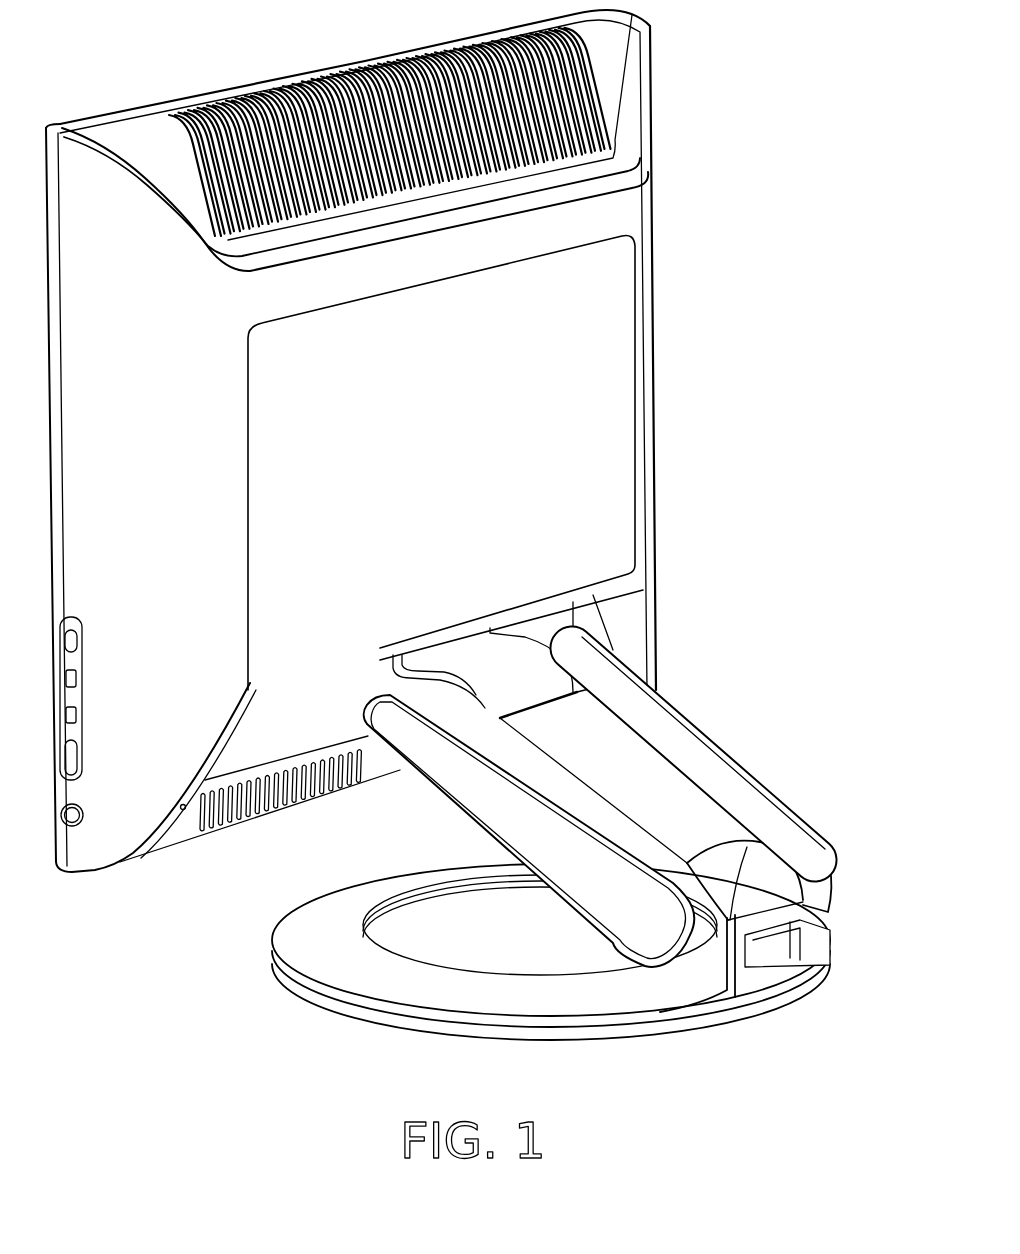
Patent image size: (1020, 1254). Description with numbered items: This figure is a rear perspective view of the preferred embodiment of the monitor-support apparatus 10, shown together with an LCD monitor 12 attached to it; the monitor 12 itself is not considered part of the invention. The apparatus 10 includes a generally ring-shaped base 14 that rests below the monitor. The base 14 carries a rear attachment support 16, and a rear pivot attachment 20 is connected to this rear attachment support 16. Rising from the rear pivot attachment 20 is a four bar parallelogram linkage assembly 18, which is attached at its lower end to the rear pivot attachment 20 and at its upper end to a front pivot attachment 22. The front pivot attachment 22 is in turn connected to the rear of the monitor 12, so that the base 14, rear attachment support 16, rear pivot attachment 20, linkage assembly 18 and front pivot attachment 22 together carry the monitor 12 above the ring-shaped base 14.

The apparatus 10 is at (480, 547).
The monitor 12 is at (565, 430).
The base 14 is at (312, 990).
The rear attachment support 16 is at (765, 980).
The four bar parallelogram linkage assembly 18 is at (718, 741).
The rear pivot attachment 20 is at (827, 848).
The front pivot attachment 22 is at (598, 628).